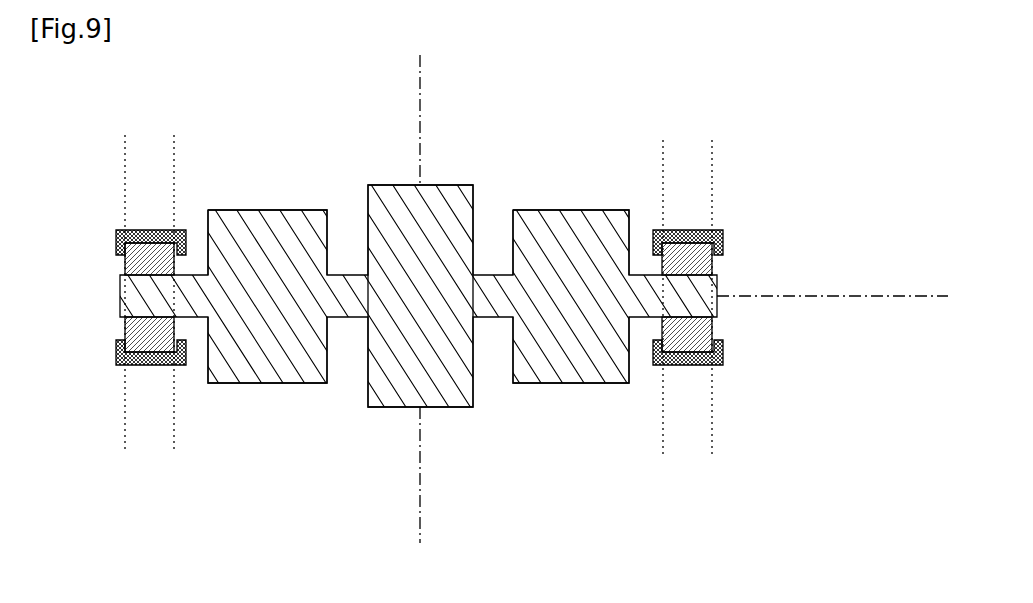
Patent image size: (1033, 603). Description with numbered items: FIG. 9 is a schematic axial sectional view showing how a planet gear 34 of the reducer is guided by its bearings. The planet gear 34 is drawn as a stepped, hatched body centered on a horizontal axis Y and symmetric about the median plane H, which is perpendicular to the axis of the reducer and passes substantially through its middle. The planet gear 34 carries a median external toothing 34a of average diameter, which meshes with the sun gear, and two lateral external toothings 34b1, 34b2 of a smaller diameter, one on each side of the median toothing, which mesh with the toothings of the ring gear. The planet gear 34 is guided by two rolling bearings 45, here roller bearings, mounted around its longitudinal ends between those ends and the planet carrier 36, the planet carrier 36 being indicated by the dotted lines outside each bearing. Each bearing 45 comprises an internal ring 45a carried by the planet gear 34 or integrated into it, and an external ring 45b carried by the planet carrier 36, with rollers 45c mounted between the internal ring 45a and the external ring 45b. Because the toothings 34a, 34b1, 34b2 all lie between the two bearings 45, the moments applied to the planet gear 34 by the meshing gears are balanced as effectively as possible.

The planet gear 34 is at (438, 311).
The median external toothing 34a is at (437, 393).
The lateral external toothing 34b1 is at (293, 377).
The lateral external toothing 34b2 is at (595, 370).
The planet carrier 36 is at (703, 433).
The rolling bearing 45 is at (484, 330).
The internal ring 45a is at (700, 307).
The external ring 45b is at (680, 365).
The rollers 45c is at (715, 267).
The median plane H is at (422, 115).
The horizontal axis Y is at (880, 295).